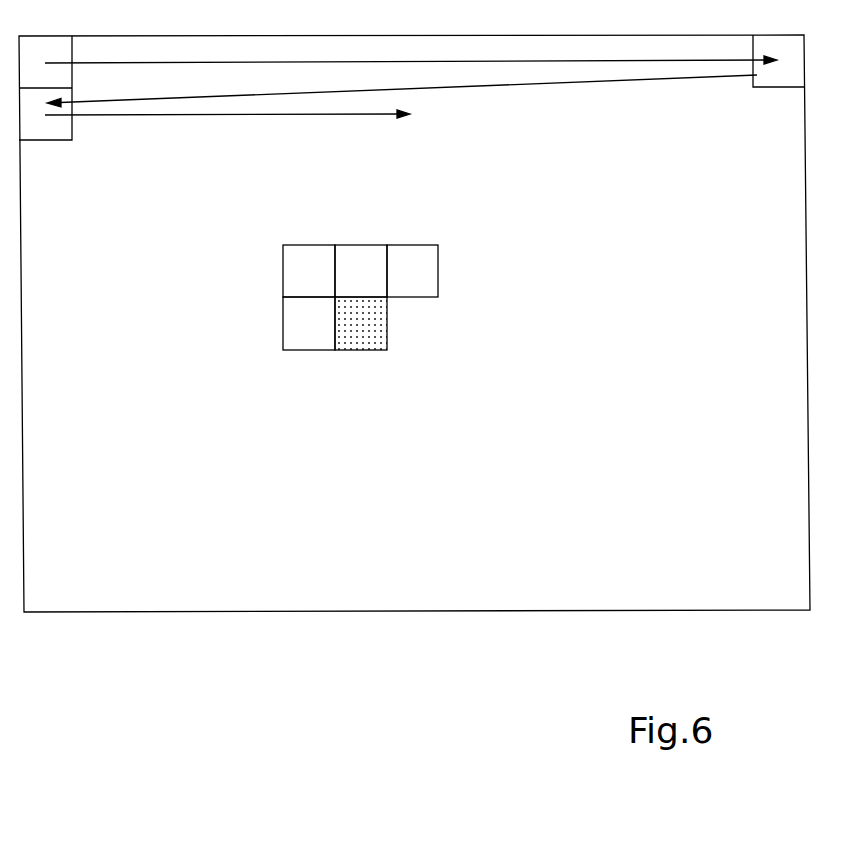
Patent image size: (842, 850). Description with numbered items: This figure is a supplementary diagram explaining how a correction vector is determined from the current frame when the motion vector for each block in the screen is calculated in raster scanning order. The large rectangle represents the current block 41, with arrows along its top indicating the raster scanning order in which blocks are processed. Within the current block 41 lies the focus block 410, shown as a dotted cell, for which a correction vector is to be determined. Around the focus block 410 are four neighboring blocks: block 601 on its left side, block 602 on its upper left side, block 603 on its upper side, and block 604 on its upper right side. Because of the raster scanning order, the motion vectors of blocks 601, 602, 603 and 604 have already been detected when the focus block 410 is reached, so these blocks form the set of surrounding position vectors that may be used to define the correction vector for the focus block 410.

The current block 41 is at (347, 612).
The block 601 is at (310, 323).
The block 602 is at (310, 272).
The block 603 is at (355, 272).
The block 604 is at (418, 273).
The focus block 410 is at (360, 325).